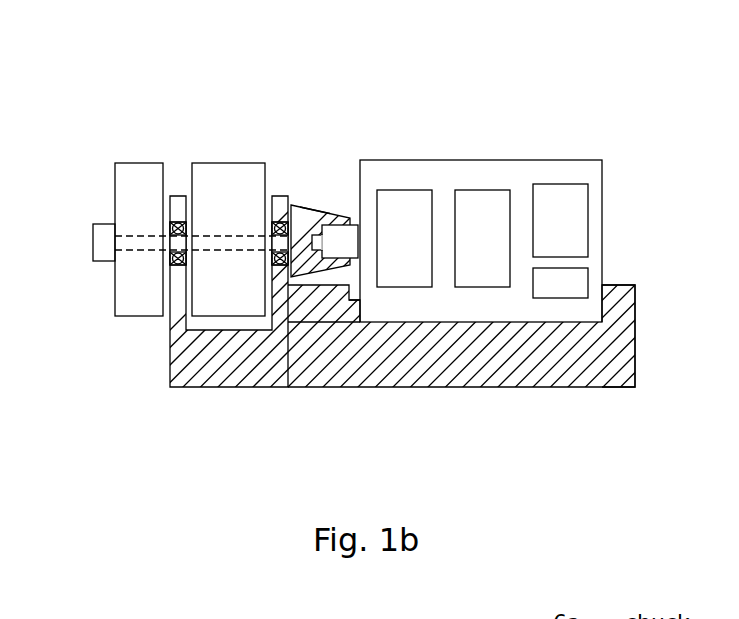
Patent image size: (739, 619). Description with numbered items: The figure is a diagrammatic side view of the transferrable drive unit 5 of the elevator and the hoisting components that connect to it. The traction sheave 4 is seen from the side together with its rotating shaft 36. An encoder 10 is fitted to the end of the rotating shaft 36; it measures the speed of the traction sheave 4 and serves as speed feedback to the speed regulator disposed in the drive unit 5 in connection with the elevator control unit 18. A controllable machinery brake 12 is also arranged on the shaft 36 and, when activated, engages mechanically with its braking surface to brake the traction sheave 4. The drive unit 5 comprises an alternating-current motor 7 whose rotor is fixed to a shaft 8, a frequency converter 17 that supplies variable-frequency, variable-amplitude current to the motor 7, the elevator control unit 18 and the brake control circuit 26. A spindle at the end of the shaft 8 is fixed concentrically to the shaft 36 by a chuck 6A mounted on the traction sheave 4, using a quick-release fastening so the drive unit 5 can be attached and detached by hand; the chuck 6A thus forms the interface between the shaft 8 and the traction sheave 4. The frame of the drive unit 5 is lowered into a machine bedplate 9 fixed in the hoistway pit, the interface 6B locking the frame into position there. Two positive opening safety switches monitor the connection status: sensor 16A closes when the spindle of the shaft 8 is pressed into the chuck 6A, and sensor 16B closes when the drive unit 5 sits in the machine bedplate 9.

The traction sheave 4 is at (230, 163).
The drive unit 5 is at (602, 233).
The chuck 6A is at (305, 207).
The interface 6B is at (603, 308).
The alternating-current motor 7 is at (411, 253).
The shaft 8 is at (335, 218).
The machine bedplate 9 is at (457, 387).
The encoder 10 is at (92, 240).
The machinery brake 12 is at (143, 163).
The sensor 16A is at (315, 212).
The sensor 16B is at (355, 300).
The frequency converter 17 is at (496, 253).
The elevator control unit 18 is at (574, 231).
The brake control circuit 26 is at (574, 293).
The rotating shaft 36 is at (218, 251).